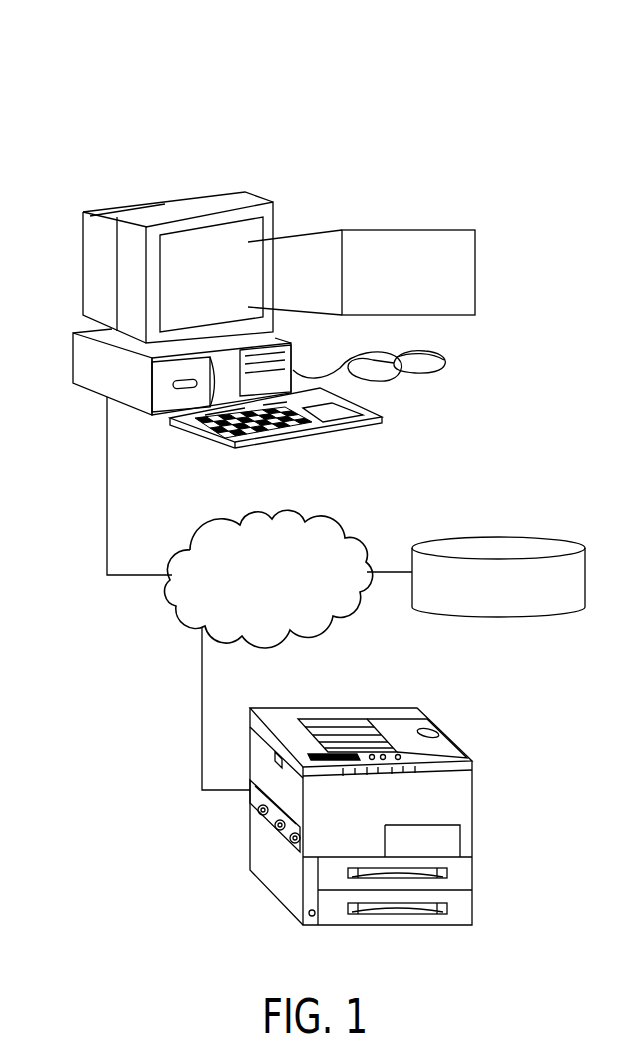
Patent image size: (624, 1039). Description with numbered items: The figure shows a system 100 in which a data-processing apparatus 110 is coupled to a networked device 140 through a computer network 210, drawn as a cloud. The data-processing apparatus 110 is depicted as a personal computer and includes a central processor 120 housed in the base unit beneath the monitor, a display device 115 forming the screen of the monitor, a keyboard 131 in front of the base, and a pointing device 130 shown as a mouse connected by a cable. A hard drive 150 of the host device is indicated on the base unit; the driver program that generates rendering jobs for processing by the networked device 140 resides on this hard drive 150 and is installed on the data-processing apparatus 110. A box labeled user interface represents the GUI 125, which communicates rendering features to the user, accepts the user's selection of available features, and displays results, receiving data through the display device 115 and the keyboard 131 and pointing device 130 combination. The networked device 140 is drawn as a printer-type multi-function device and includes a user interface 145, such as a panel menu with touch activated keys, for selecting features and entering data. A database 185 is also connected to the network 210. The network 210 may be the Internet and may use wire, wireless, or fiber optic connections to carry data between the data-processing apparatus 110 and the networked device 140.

The system 100 is at (528, 108).
The data-processing apparatus 110 is at (213, 197).
The display device 115 is at (212, 230).
The central processor 120 is at (87, 390).
The GUI 125 is at (410, 228).
The pointing device 130 is at (404, 387).
The keyboard 131 is at (197, 437).
The networked device 140 is at (392, 708).
The user interface 145 is at (401, 757).
The hard drive 150 is at (83, 360).
The database 185 is at (557, 537).
The network 210 is at (172, 607).